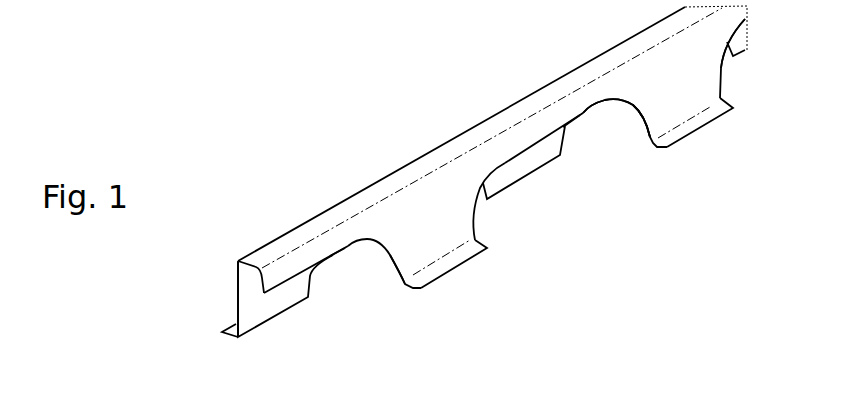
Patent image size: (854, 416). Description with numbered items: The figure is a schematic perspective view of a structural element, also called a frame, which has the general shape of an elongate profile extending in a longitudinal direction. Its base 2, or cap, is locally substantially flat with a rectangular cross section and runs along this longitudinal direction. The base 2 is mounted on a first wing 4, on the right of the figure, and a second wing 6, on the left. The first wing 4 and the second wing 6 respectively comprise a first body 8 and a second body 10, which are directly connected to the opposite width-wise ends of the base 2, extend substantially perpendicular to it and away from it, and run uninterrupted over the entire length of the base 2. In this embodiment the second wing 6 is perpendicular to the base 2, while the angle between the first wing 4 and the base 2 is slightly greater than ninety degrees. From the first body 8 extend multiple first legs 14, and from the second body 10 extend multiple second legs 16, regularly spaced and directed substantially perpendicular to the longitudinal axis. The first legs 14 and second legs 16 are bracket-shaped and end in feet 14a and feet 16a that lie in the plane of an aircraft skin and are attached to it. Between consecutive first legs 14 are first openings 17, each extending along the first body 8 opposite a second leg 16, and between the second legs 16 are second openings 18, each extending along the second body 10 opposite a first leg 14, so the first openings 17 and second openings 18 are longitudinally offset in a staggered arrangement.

The base 2 is at (388, 180).
The first wing 4 is at (453, 218).
The second wing 6 is at (238, 308).
The first body 8 is at (586, 104).
The second body 10 is at (247, 277).
The first legs 14 is at (425, 255).
The feet of the first legs 14a is at (447, 265).
The second legs 16 is at (527, 163).
The feet of the second legs 16a is at (227, 333).
The first openings 17 is at (372, 266).
The second openings 18 is at (338, 254).